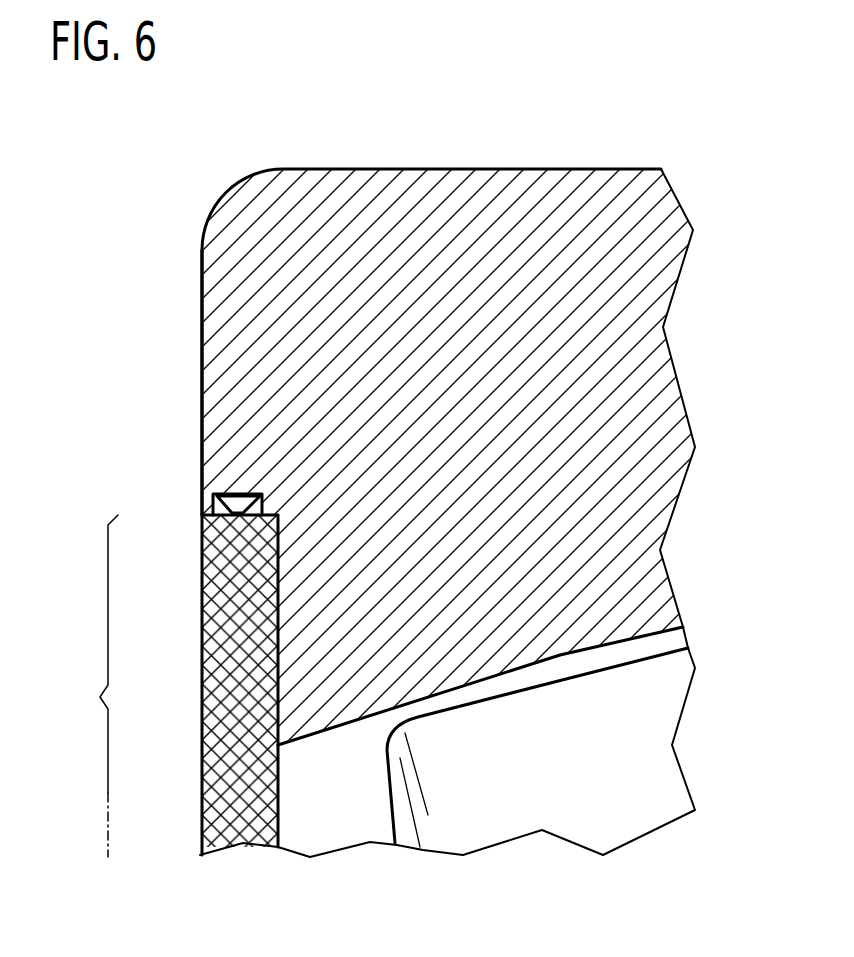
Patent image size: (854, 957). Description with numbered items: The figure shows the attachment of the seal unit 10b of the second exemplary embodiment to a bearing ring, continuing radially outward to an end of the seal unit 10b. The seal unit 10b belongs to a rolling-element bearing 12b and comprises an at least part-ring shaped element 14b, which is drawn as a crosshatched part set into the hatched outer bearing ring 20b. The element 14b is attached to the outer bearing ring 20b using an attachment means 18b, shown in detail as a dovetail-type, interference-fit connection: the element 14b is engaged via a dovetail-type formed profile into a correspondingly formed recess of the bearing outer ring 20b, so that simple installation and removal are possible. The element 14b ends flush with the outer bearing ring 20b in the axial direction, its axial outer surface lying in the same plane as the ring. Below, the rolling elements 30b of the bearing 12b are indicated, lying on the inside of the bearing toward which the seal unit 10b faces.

The rolling-element bearing 12b is at (637, 128).
The outer bearing ring 20b is at (215, 295).
The attachment means 18b is at (238, 496).
The part-ring shaped element 14b is at (215, 753).
The seal unit 10b is at (84, 686).
The rolling elements 30b is at (507, 833).